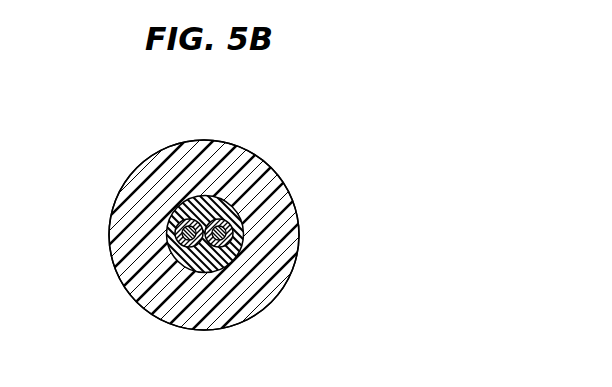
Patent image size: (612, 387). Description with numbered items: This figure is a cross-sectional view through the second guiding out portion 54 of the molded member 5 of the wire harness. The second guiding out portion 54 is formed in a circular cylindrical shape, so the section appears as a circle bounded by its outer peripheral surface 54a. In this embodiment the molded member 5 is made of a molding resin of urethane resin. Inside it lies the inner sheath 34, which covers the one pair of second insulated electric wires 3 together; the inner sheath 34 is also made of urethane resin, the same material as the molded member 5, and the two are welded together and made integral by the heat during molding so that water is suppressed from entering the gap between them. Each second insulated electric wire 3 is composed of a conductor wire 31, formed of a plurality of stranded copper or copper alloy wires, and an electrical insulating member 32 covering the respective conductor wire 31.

The molded member 5 is at (242, 143).
The second guiding out portion 54 is at (132, 186).
The outer peripheral surface of the second guiding out portion 54a is at (110, 229).
The inner sheath 34 is at (263, 193).
The second insulated electric wire 3 is at (251, 282).
The conductor wire 31 is at (220, 240).
The electrical insulating member 32 is at (229, 247).